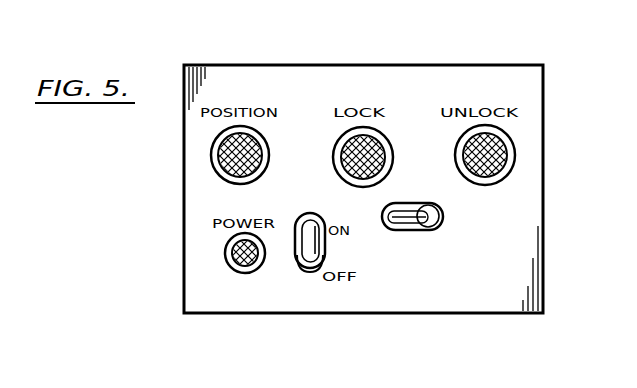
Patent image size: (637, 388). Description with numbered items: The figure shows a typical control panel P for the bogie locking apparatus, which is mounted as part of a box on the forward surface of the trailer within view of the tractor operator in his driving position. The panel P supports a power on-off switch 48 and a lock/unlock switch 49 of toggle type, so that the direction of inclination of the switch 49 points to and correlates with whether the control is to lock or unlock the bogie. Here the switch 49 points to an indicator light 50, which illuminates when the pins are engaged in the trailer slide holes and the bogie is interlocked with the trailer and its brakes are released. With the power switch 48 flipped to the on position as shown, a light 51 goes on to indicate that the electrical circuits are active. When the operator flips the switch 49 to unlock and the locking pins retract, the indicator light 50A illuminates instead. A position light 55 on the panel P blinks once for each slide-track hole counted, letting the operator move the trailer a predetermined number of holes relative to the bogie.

The position light 55 is at (215, 147).
The indicator light 50 is at (383, 143).
The indicator light 50A is at (511, 152).
The light 51 is at (226, 249).
The power on-off switch 48 is at (297, 245).
The lock/unlock switch 49 is at (406, 226).
The panel P is at (558, 230).